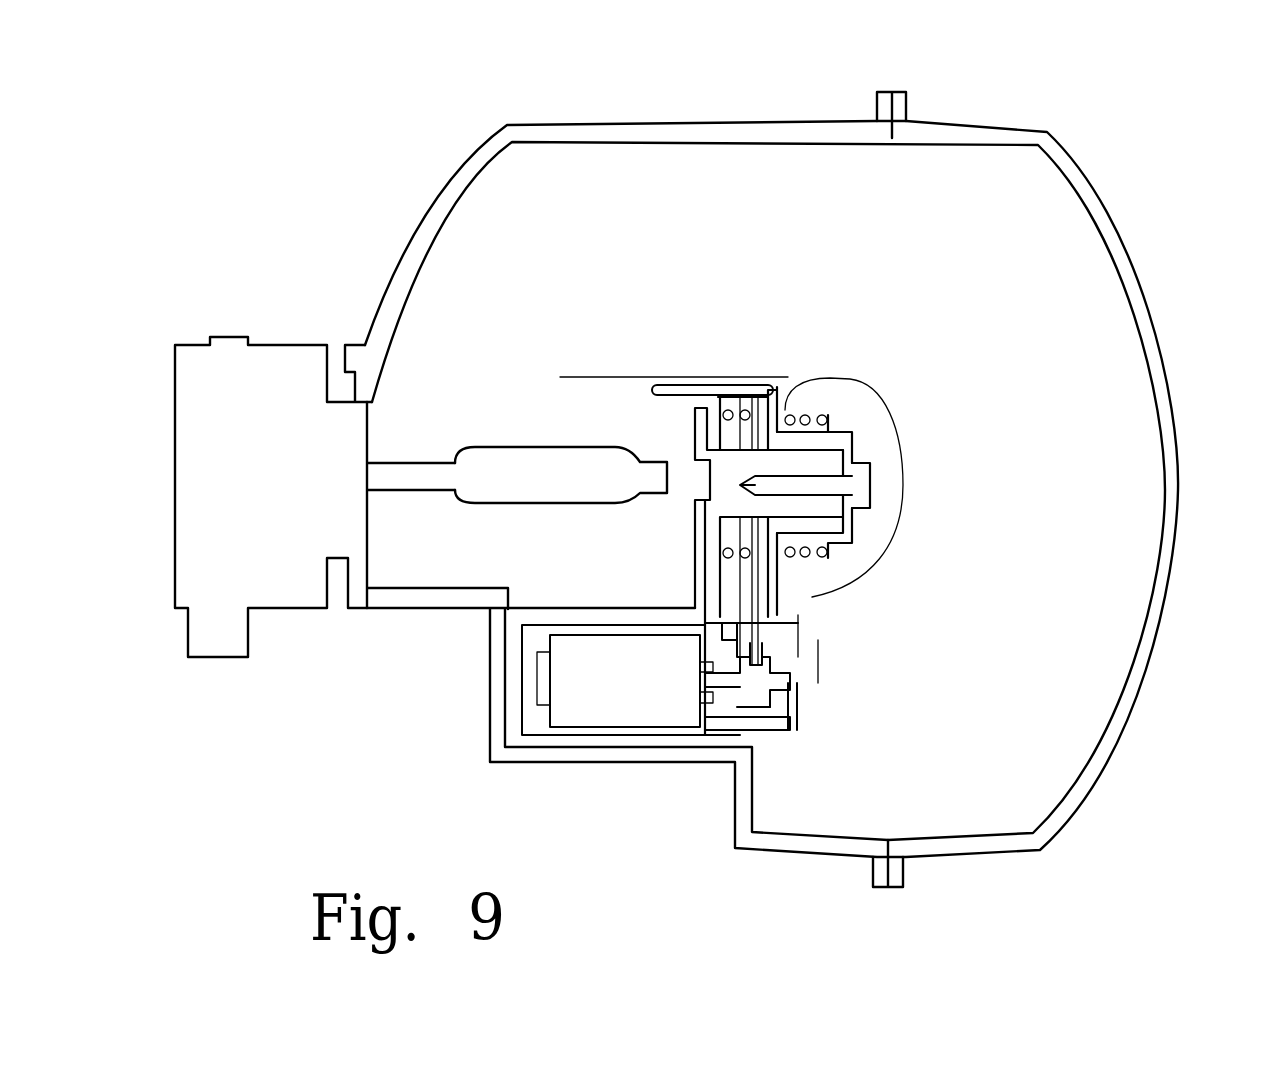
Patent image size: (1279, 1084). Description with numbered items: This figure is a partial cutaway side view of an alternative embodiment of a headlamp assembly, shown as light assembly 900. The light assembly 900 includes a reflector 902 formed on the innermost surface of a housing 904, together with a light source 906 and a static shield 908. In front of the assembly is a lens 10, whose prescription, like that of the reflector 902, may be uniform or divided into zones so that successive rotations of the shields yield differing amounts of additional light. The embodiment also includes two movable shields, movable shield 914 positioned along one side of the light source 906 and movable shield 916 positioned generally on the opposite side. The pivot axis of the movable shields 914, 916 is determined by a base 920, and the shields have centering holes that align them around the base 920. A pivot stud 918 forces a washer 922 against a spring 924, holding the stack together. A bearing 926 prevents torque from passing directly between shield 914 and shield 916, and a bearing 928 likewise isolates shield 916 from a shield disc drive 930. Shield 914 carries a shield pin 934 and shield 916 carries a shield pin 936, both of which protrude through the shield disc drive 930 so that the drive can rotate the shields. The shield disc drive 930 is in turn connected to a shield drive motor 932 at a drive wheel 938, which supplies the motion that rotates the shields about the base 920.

The lens 10 is at (716, 489).
The light assembly 900 is at (887, 459).
The reflector 902 is at (453, 217).
The housing 904 is at (397, 273).
The light source 906 is at (502, 506).
The static shield 908 is at (617, 377).
The movable shield 914 is at (715, 405).
The movable shield 916 is at (800, 390).
The pivot stud 918 is at (888, 482).
The base 920 is at (697, 488).
The washer 922 is at (888, 448).
The spring 924 is at (832, 410).
The bearing 926 is at (742, 408).
The bearing 928 is at (750, 405).
The shield disc drive 930 is at (735, 606).
The shield drive motor 932 is at (720, 723).
The shield pin 934 is at (818, 642).
The shield pin 936 is at (803, 627).
The drive wheel 938 is at (752, 722).